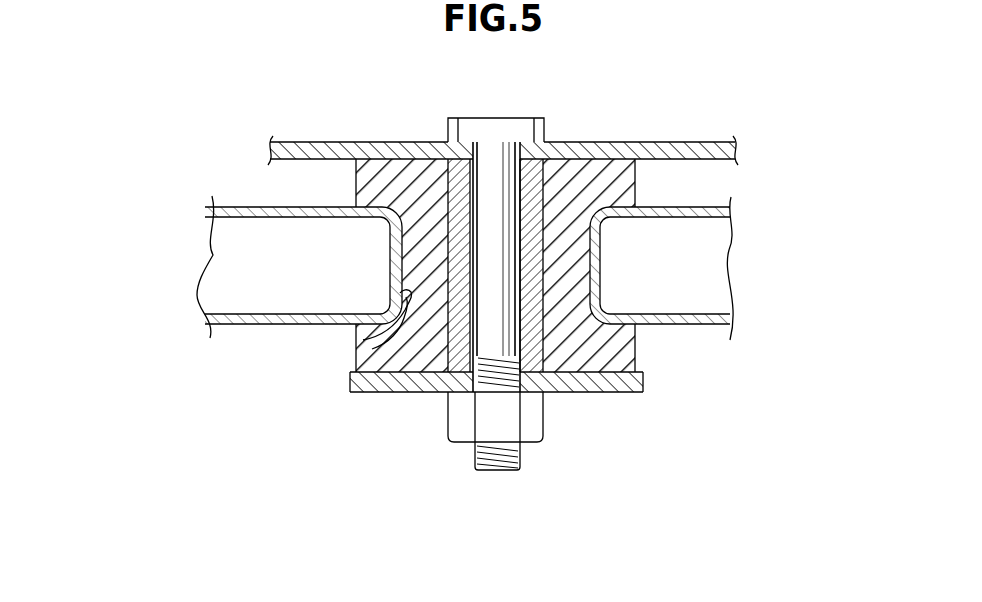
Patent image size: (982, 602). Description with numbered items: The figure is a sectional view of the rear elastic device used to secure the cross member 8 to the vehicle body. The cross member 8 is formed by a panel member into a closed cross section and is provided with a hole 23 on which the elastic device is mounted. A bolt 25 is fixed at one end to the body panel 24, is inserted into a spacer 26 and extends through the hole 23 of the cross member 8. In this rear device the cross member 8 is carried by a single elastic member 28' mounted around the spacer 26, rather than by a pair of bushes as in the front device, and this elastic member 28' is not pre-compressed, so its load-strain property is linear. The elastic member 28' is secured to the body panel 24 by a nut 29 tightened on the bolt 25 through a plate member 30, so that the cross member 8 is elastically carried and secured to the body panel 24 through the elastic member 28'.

The body panel 24 is at (342, 142).
The cross member 8 is at (288, 310).
The hole 23 is at (363, 340).
The spacer 26 is at (455, 362).
The elastic member 28' is at (632, 267).
The nut 29 is at (543, 421).
The plate member 30 is at (630, 388).
The bolt 25 is at (490, 462).